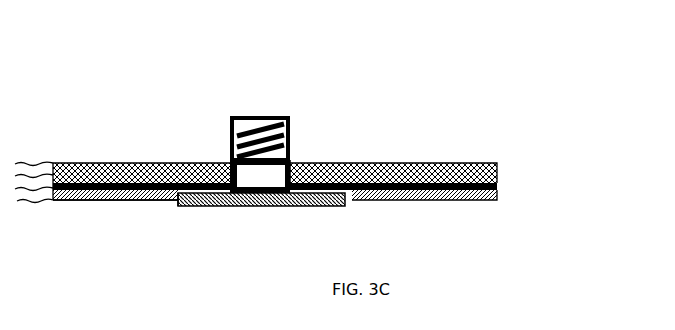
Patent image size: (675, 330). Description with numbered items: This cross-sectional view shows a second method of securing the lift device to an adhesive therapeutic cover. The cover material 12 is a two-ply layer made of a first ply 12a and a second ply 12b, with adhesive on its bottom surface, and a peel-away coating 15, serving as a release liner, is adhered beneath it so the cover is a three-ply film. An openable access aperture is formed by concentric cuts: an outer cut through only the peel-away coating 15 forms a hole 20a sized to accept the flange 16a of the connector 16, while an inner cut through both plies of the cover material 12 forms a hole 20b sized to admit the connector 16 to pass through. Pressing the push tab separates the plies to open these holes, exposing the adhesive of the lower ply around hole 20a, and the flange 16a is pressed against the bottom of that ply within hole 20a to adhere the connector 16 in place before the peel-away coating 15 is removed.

The cover material 12 is at (300, 175).
The first ply 12a is at (483, 157).
The second ply 12b is at (497, 188).
The peel-away coating 15 is at (83, 202).
The connector 16 is at (236, 115).
The flange 16a is at (318, 208).
The hole in the release liner 20a is at (173, 197).
The hole in the plies of the cover material 20b is at (293, 158).